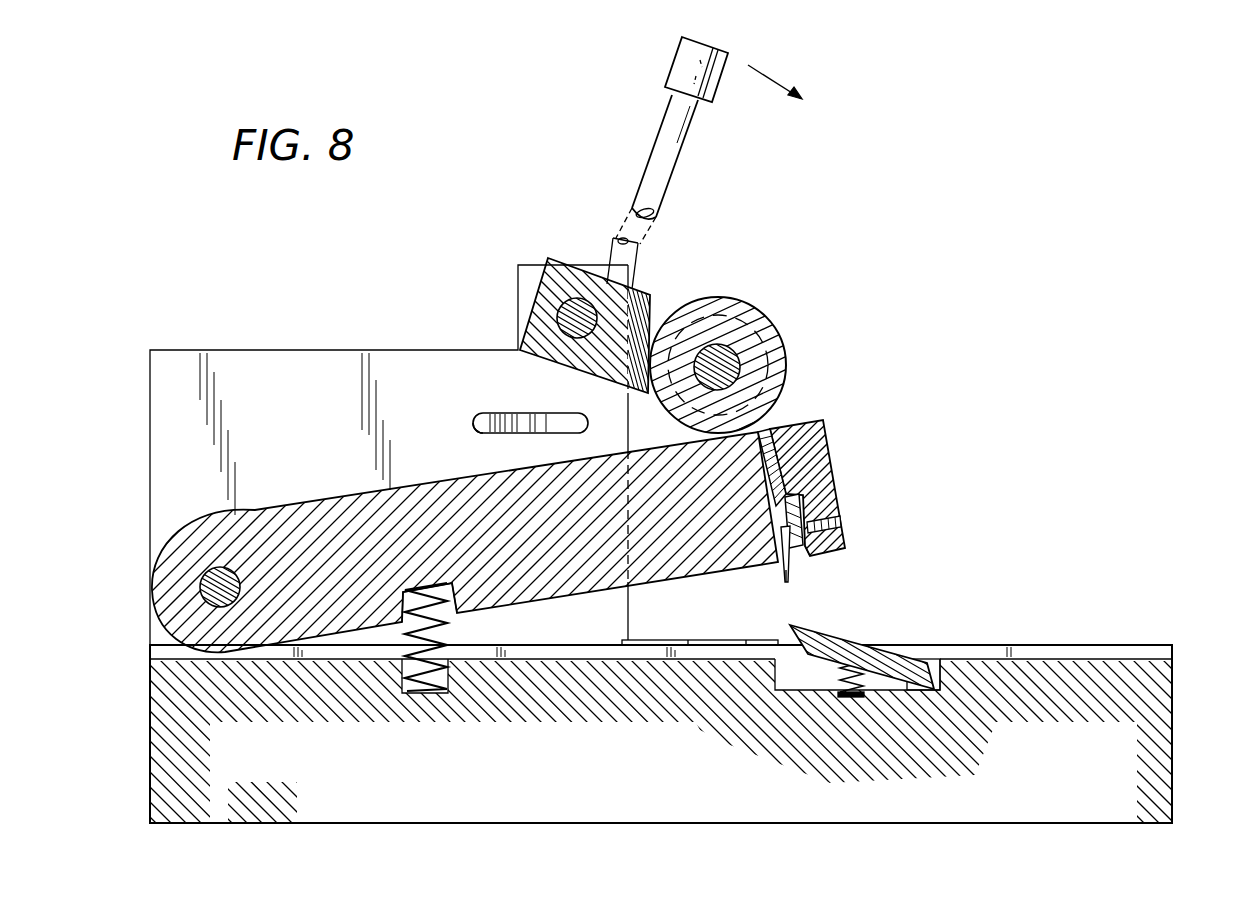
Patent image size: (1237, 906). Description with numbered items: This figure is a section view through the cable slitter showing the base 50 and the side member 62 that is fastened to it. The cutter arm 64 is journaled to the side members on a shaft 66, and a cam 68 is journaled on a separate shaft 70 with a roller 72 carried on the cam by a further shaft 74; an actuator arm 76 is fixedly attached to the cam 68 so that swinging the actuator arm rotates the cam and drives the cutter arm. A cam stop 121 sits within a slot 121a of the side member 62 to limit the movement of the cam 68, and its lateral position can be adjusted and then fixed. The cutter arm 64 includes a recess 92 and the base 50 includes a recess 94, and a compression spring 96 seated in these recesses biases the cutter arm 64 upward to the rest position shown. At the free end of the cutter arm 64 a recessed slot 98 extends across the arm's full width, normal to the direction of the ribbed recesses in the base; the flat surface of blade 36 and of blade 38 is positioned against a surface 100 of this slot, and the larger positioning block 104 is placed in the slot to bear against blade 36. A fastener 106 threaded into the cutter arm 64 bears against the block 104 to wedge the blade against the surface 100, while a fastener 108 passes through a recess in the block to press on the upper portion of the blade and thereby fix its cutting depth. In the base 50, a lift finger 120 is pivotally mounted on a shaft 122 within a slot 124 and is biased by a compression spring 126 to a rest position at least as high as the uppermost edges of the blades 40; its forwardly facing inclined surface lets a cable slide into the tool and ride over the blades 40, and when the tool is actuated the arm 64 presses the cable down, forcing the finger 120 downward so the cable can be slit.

The blade 36 is at (778, 562).
The blade 38 is at (789, 578).
The blades 40 is at (725, 640).
The base 50 is at (1172, 735).
The side member 62 is at (337, 350).
The cutter arm 64 is at (276, 512).
The shaft 66 is at (200, 588).
The cam 68 is at (588, 263).
The shaft 70 is at (557, 318).
The roller 72 is at (787, 357).
The shaft 74 is at (733, 337).
The actuator arm 76 is at (672, 171).
The recess 92 is at (455, 598).
The recess 94 is at (447, 690).
The compression spring 96 is at (440, 640).
The recessed slot 98 is at (808, 555).
The surface 100 is at (783, 523).
The positioning block 104 is at (801, 500).
The fastener 106 is at (841, 519).
The fastener 108 is at (780, 453).
The lift finger 120 is at (840, 635).
The cam stop 121 is at (528, 412).
The slot 121a is at (480, 433).
The shaft 122 is at (923, 693).
The slot 124 is at (808, 689).
The compression spring 126 is at (832, 680).